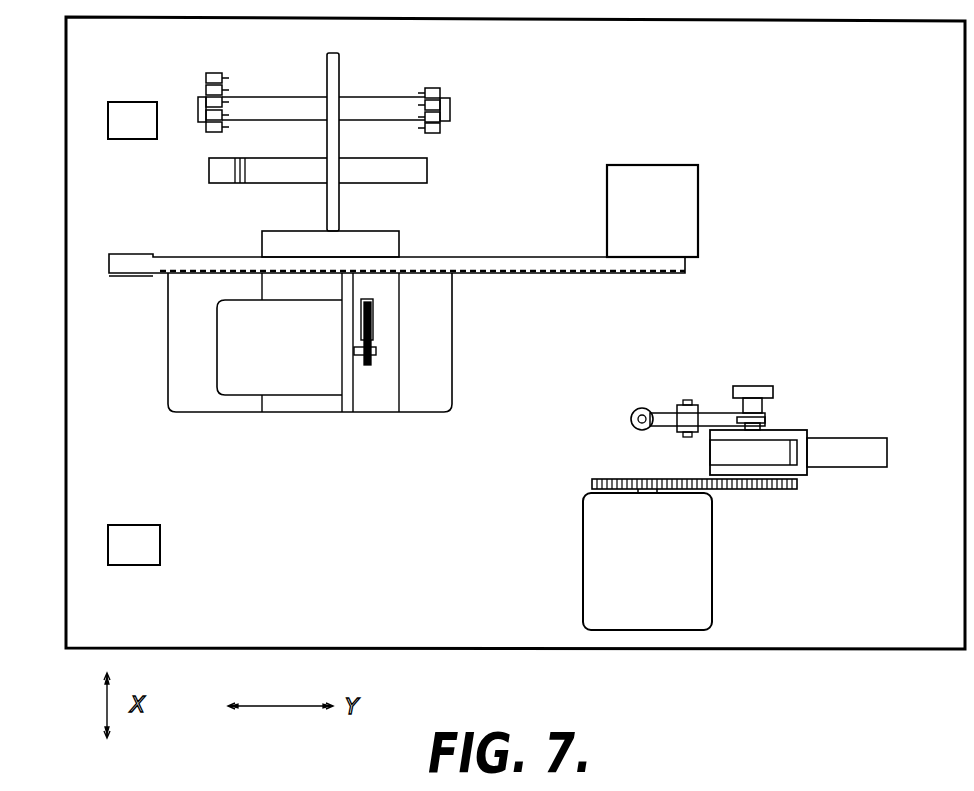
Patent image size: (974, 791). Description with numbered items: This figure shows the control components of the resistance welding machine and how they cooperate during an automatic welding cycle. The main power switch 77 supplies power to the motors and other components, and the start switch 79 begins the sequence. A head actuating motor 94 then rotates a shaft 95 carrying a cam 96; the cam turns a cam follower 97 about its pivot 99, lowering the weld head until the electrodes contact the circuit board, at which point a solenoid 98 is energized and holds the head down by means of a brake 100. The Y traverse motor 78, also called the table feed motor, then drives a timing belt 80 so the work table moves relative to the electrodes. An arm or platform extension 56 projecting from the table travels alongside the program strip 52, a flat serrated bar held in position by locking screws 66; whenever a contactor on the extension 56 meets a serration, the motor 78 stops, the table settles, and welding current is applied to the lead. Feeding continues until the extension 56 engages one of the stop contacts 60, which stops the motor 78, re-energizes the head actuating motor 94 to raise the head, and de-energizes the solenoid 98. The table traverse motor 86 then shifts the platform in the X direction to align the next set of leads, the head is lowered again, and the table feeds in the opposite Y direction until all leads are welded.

The program strip 52 is at (271, 183).
The arm 56 is at (339, 208).
The stop contacts 60 is at (222, 75).
The locking screws 66 is at (240, 183).
The main power switch 77 is at (127, 102).
The Y traverse motor 78 is at (698, 200).
The start switch 79 is at (160, 563).
The timing belt 80 is at (587, 278).
The table traverse motor 86 is at (310, 395).
The head actuating motor 94 is at (712, 585).
The shaft 95 is at (755, 489).
The cam 96 is at (762, 415).
The cam follower 97 is at (660, 413).
The solenoid 98 is at (887, 440).
The pivot 99 is at (688, 403).
The brake 100 is at (775, 450).